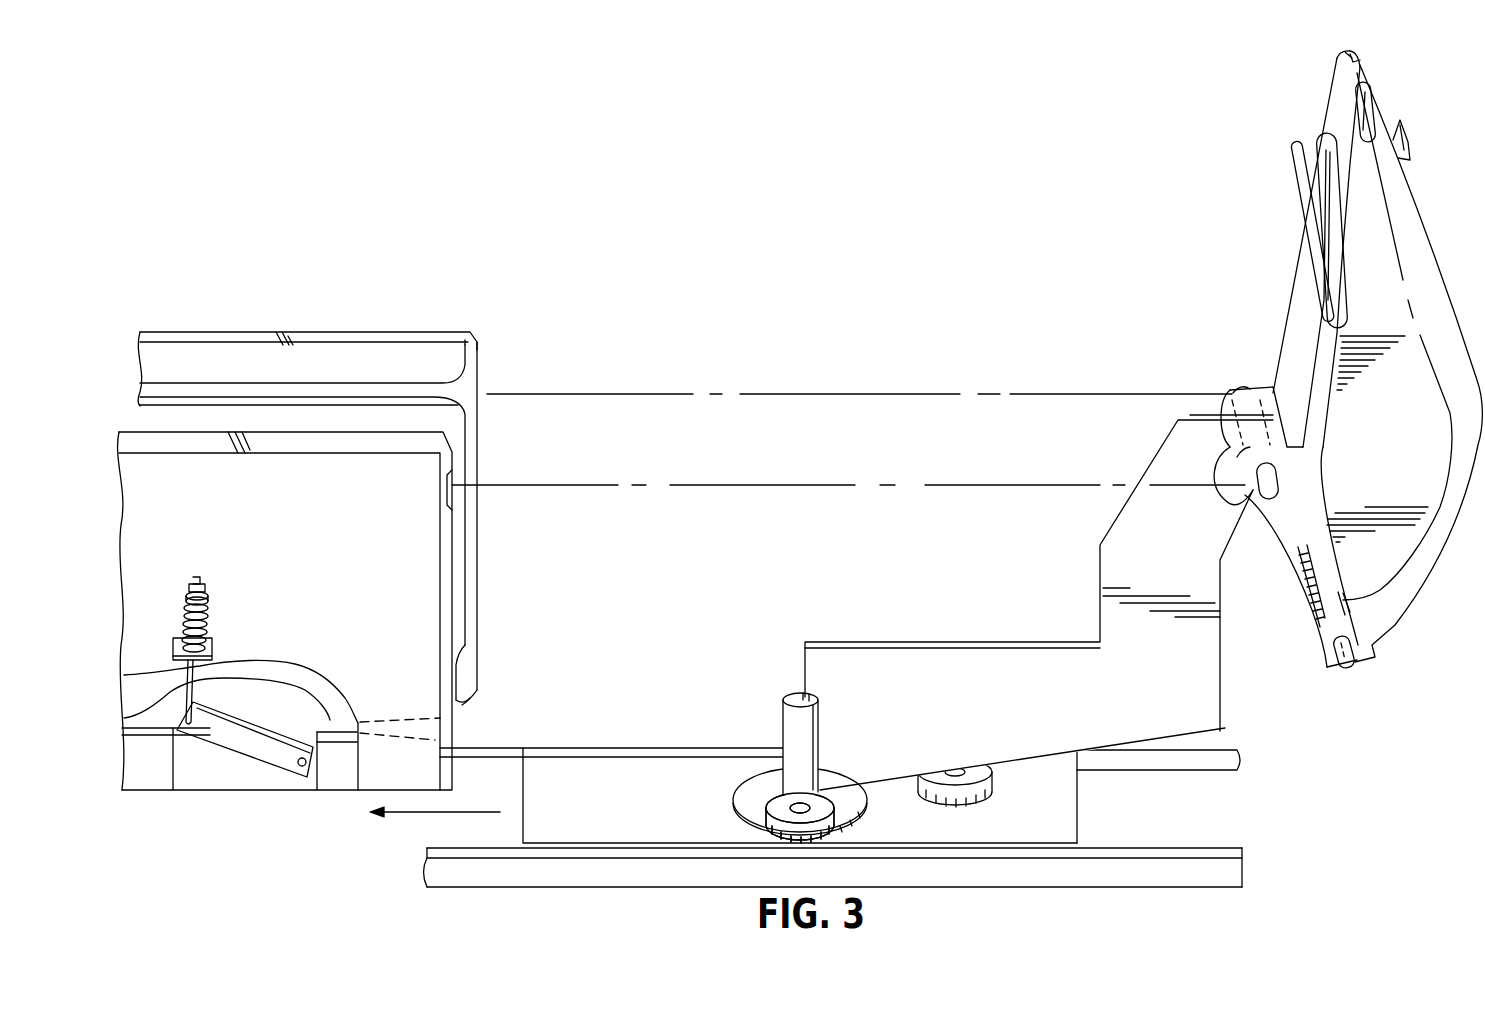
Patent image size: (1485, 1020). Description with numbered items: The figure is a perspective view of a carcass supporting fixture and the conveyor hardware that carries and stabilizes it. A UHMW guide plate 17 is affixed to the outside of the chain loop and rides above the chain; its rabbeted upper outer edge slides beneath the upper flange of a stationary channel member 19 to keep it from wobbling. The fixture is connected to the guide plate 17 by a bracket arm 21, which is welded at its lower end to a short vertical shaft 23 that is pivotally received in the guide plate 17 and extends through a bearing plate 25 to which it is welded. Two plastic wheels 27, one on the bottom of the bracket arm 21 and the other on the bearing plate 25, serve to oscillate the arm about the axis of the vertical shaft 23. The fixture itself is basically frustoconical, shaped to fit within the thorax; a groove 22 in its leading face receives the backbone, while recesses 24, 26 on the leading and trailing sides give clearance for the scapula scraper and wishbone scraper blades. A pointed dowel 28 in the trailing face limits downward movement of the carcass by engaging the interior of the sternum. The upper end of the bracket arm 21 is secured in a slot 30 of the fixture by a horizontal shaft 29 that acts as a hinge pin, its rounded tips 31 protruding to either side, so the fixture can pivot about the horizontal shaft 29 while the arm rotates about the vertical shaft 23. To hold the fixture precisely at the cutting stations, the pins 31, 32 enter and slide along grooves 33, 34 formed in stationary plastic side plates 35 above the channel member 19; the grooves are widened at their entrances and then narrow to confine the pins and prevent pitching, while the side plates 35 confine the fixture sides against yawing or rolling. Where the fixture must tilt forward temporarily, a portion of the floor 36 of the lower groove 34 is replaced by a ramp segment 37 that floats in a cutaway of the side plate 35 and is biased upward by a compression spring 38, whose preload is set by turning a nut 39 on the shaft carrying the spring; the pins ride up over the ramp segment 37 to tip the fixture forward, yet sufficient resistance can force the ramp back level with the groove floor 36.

The guide plate 17 is at (618, 765).
The stationary channel member 19 is at (1178, 770).
The bracket arm 21 is at (942, 642).
The groove 22 is at (1355, 57).
The vertical shaft 23 is at (782, 697).
The recess 24 is at (1330, 190).
The bearing plate 25 is at (745, 792).
The recess 26 is at (1368, 130).
The plastic wheel 27 is at (857, 817).
The pointed dowel 28 is at (1410, 148).
The horizontal shaft 29 is at (1250, 488).
The slot 30 is at (1263, 388).
The rounded tip 31 is at (1270, 499).
The pin 32 is at (1350, 668).
The groove 33 is at (468, 384).
The groove 34 is at (455, 653).
The side plate 35 is at (330, 330).
The floor 36 is at (386, 733).
The ramp segment 37 is at (247, 748).
The compression spring 38 is at (186, 620).
The nut 39 is at (208, 585).